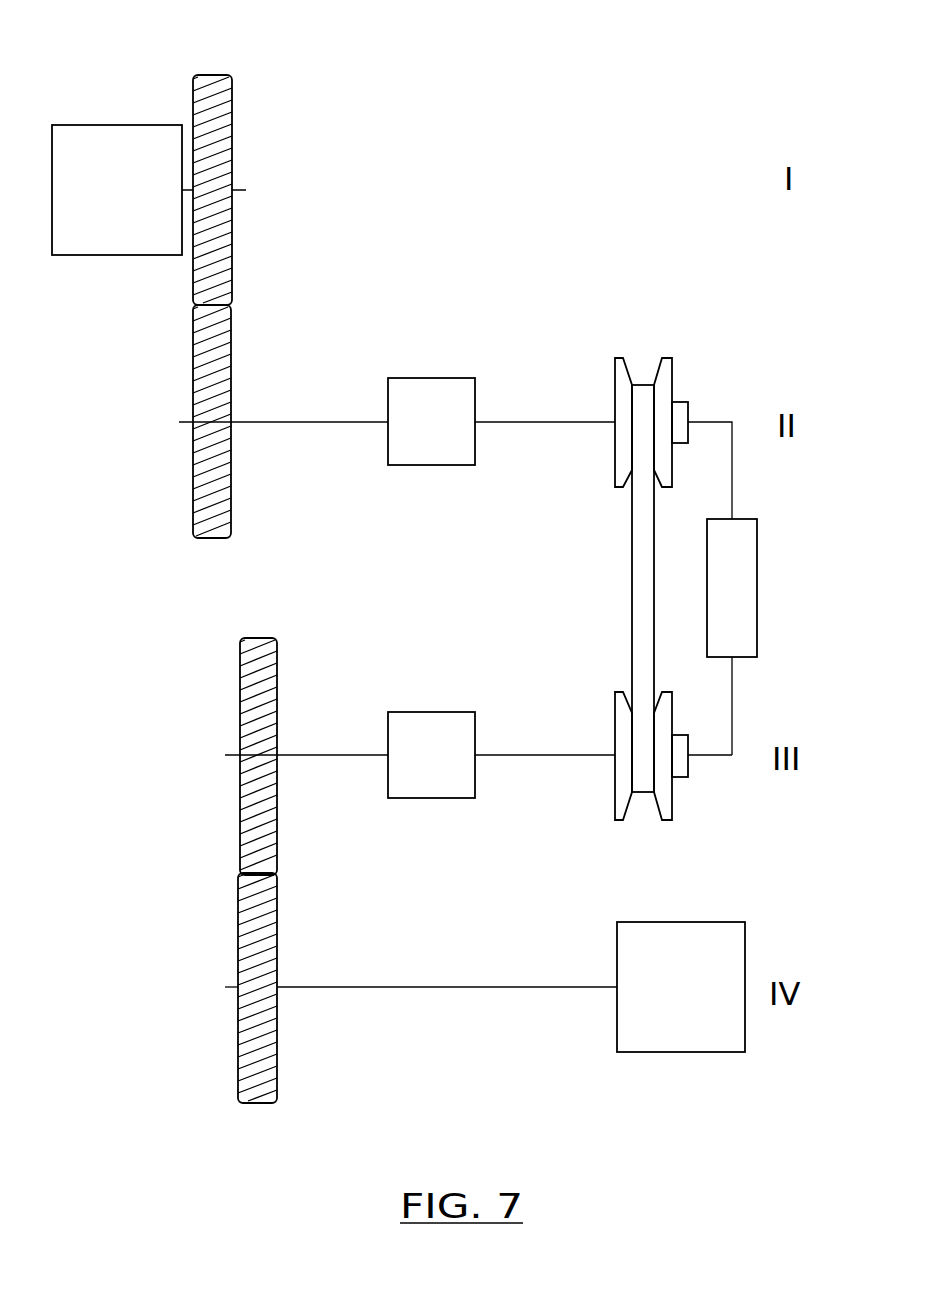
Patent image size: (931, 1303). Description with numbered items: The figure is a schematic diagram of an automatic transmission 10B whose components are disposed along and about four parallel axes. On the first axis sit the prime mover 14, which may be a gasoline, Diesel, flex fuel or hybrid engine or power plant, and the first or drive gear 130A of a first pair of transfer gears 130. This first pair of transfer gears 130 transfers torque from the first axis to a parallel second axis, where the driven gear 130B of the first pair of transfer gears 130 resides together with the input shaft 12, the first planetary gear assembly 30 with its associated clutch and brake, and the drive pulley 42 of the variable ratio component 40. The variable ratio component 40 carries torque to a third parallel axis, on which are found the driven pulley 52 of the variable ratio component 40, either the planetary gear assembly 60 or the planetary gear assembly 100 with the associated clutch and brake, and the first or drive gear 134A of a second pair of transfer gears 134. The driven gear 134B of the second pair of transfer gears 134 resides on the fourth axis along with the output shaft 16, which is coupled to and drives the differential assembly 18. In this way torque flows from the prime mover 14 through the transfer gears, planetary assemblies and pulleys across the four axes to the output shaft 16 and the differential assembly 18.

The prime mover 14 is at (100, 202).
The first pair of transfer gears 130 is at (320, 306).
The first or drive gear 130A is at (218, 118).
The driven gear 130B is at (218, 495).
The input shaft 12 is at (305, 422).
The first planetary gear assembly 30 is at (451, 352).
The variable ratio component 40 is at (685, 519).
The drive pulley 42 is at (657, 398).
The driven pulley 52 is at (665, 787).
The planetary gear assembly 60 is at (449, 708).
The planetary gear assembly 100 is at (449, 698).
The automatic transmission 10B is at (176, 746).
The second pair of transfer gears 134 is at (232, 870).
The first or drive gear 134A is at (263, 680).
The driven gear 134B is at (265, 1058).
The output shaft 16 is at (533, 986).
The differential assembly 18 is at (698, 1002).